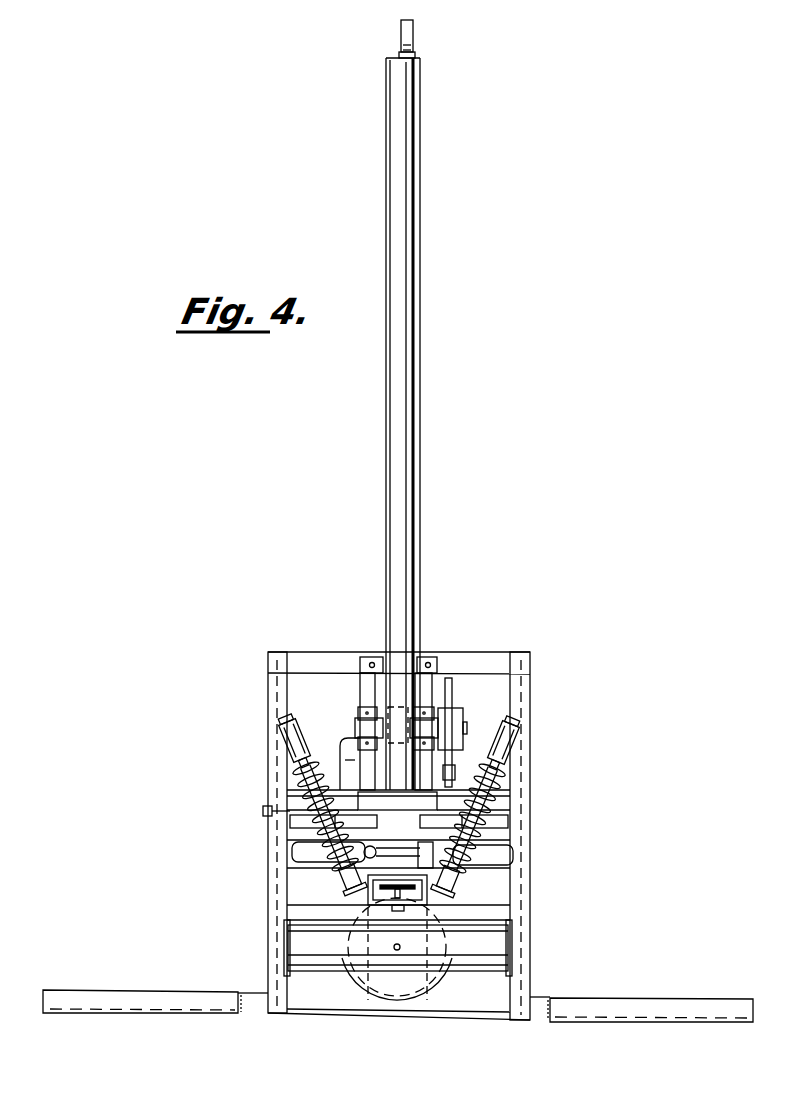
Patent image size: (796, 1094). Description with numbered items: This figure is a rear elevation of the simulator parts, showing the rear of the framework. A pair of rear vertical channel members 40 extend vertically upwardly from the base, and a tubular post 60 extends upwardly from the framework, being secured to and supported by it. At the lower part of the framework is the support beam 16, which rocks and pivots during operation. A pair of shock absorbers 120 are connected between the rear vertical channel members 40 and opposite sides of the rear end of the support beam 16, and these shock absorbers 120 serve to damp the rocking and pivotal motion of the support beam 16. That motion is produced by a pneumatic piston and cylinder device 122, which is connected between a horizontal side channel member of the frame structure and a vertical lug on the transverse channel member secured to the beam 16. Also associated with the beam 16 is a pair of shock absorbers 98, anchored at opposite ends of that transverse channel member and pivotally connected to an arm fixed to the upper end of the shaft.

The tubular post 60 is at (404, 343).
The shock absorbers 120 is at (310, 800).
The pneumatic piston and cylinder device 122 is at (290, 828).
The vertical channel members 40 is at (270, 913).
The shock absorbers 98 is at (320, 857).
The support beam 16 is at (423, 907).